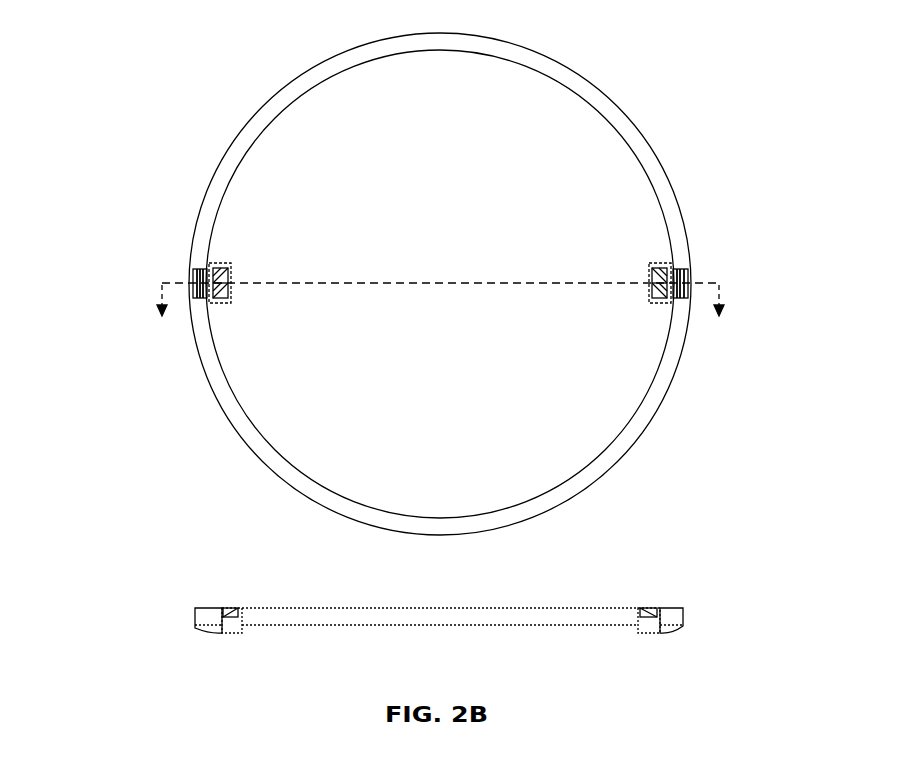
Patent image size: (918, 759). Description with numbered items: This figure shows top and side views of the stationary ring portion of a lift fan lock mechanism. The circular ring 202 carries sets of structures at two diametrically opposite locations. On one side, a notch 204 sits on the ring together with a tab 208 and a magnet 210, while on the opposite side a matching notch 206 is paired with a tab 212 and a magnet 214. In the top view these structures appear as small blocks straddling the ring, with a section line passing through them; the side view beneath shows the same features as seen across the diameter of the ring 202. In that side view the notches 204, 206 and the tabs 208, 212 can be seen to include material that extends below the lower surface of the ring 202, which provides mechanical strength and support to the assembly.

The ring 202 is at (245, 128).
The notch 204 is at (192, 275).
The notch 206 is at (690, 277).
The tab 208 is at (232, 295).
The magnet 210 is at (230, 273).
The tab 212 is at (651, 295).
The magnet 214 is at (651, 273).